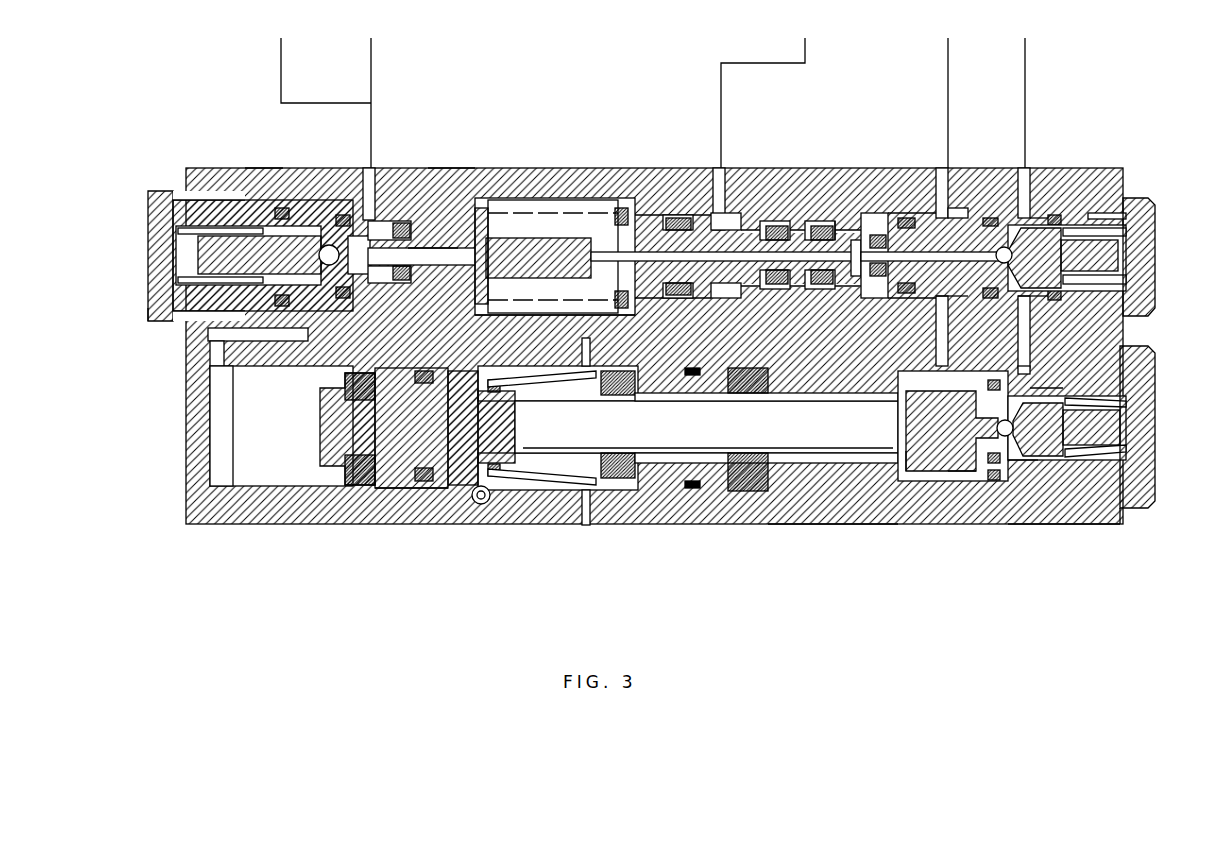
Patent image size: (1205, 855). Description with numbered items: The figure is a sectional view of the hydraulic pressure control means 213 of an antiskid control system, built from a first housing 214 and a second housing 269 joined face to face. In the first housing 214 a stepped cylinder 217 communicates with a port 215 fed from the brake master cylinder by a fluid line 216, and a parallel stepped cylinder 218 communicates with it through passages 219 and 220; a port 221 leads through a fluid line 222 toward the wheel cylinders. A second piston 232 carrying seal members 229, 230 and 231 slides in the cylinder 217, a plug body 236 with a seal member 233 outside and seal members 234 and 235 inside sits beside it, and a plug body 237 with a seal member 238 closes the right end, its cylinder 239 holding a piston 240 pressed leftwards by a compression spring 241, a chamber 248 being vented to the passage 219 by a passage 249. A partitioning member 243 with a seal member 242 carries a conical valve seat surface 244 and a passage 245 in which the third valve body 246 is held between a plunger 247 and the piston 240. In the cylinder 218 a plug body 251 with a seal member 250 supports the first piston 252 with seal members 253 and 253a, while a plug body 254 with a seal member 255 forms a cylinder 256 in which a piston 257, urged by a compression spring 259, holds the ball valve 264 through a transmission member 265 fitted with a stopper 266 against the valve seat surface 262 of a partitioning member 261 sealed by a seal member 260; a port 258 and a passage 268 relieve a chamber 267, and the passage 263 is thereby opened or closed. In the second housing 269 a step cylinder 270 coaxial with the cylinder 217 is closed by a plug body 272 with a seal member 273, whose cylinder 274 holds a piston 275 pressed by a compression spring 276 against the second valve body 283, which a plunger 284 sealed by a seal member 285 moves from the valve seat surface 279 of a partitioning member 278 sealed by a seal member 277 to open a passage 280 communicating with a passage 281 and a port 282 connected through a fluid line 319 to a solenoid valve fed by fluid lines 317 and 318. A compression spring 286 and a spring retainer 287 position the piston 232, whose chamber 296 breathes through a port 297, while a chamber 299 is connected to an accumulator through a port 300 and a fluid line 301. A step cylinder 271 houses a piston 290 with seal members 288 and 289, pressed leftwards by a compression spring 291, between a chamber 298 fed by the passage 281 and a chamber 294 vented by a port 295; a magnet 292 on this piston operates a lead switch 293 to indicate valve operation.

The hydraulic pressure control means 213 is at (163, 126).
The plug body 272 is at (152, 190).
The cylinder 274 is at (197, 196).
The compression spring 276 is at (150, 270).
The seal member 273 is at (255, 168).
The valve seat surface 279 is at (305, 233).
The second valve body 283 is at (312, 250).
The partitioning member 278 is at (345, 272).
The piston 275 is at (276, 200).
The seal member 277 is at (335, 207).
The seal member 285 is at (372, 276).
The port 282 is at (368, 213).
The passage 280 is at (368, 220).
The plunger 284 is at (437, 252).
The step cylinder 270 is at (440, 240).
The chamber 296 is at (550, 200).
The compression spring 286 is at (473, 200).
The spring retainer 287 is at (612, 200).
The second housing 269 is at (435, 170).
The magnet 292 is at (468, 355).
The seal member 230 is at (778, 222).
The first housing 214 is at (815, 168).
The seal member 229 is at (668, 207).
The port 300 is at (705, 165).
The chamber 299 is at (722, 205).
The second piston 232 is at (755, 215).
The stepped cylinder 217 is at (805, 214).
The seal member 231 is at (826, 222).
The seal member 234 is at (868, 205).
The plunger 247 is at (879, 240).
The seal member 233 is at (897, 170).
The plug body 236 is at (915, 292).
The passage 220 is at (925, 330).
The fluid line 222 is at (938, 42).
The port 221 is at (932, 165).
The partitioning member 243 is at (955, 168).
The passage 245 is at (941, 300).
The seal member 235 is at (941, 330).
The fluid line 216 is at (1015, 42).
The port 215 is at (1022, 168).
The seal member 242 is at (982, 210).
The piston 240 is at (1030, 208).
The seal member 238 is at (1046, 207).
The cylinder 239 is at (1095, 205).
The chamber 248 is at (1110, 247).
The compression spring 241 is at (1118, 224).
The third valve body 246 is at (1030, 265).
The valve seat surface 244 is at (1003, 247).
The plug body 237 is at (1147, 197).
The passage 249 is at (1022, 300).
The passage 219 is at (1022, 330).
The port 258 is at (1022, 355).
The passage 281 is at (260, 330).
The chamber 298 is at (272, 466).
The seal member 289 is at (355, 470).
The step cylinder 271 is at (395, 478).
The piston 290 is at (378, 482).
The seal member 288 is at (415, 460).
The compression spring 291 is at (462, 450).
The lead switch 293 is at (472, 497).
The chamber 294 is at (535, 478).
The seal member 253a is at (640, 428).
The plug body 251 is at (735, 482).
The port 297 is at (574, 335).
The port 295 is at (582, 500).
The seal member 253 is at (762, 482).
The seal member 250 is at (684, 482).
The first piston 252 is at (797, 440).
The stepped cylinder 218 is at (852, 457).
The passage 263 is at (970, 405).
The chamber 267 is at (1110, 418).
The compression spring 259 is at (1118, 440).
The valve seat surface 262 is at (1030, 439).
The first valve body 264 is at (1004, 418).
The seal member 260 is at (993, 452).
The partitioning member 261 is at (985, 473).
The transmission member 265 is at (950, 465).
The stopper 266 is at (895, 465).
The seal member 255 is at (1015, 455).
The piston 257 is at (1050, 385).
The plug body 254 is at (1130, 352).
The cylinder 256 is at (1100, 475).
The passage 268 is at (1045, 516).
The fluid line 319 is at (363, 122).
The fluid line 318 is at (363, 63).
The fluid line 317 is at (273, 63).
The fluid line 301 is at (797, 42).